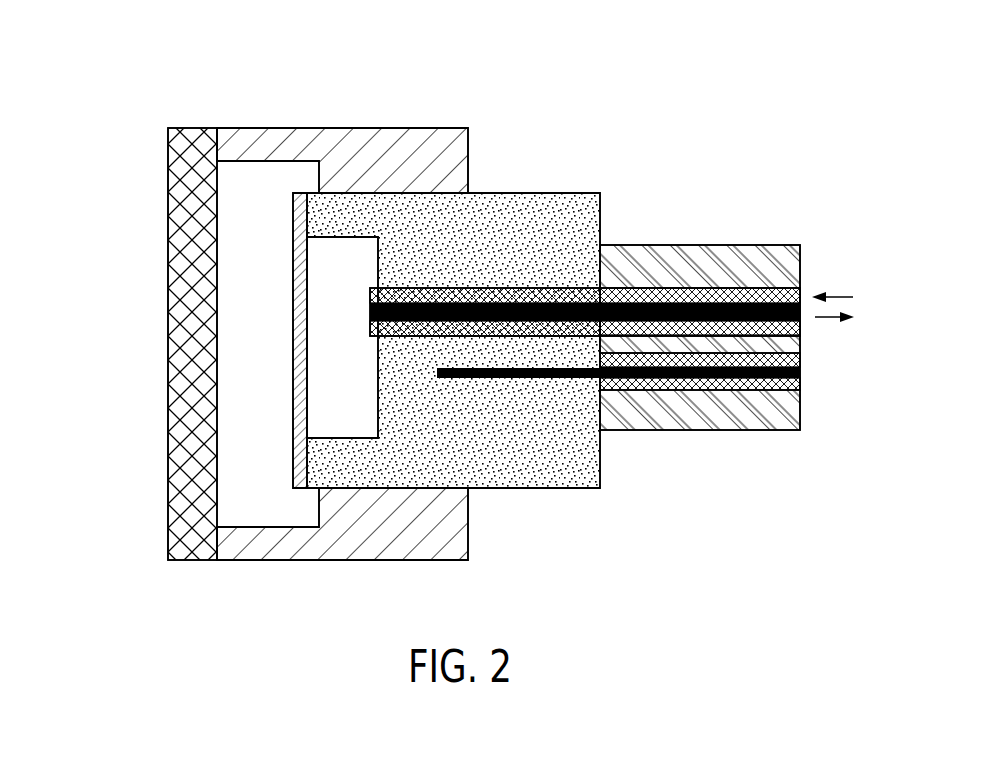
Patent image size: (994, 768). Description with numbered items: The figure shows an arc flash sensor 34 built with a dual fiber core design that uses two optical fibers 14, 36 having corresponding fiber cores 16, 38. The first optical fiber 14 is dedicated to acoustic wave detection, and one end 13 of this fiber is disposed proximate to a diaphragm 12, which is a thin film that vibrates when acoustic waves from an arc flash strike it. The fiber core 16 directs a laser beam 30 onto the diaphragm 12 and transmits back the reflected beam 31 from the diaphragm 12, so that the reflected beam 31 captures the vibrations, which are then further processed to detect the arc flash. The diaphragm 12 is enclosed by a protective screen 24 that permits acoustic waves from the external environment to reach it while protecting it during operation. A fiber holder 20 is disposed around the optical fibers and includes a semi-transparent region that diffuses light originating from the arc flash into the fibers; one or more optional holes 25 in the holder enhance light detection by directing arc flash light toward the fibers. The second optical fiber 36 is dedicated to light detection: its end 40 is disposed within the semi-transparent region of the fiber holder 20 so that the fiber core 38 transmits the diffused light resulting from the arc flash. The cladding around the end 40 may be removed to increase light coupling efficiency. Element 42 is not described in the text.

The diaphragm 12 is at (293, 208).
The end of the first optical fiber 13 is at (370, 295).
The first optical fiber 14 is at (762, 292).
The fiber core 16 is at (716, 298).
The fiber holder 20 is at (577, 490).
The protective screen 24 is at (168, 530).
The optional hole 25 is at (328, 552).
The laser beam 30 is at (838, 290).
The reflected beam 31 is at (832, 326).
The sensor 34 is at (752, 64).
The second optical fiber 36 is at (800, 402).
The fiber core of the second optical fiber 38 is at (730, 390).
The end of the second optical fiber 40 is at (437, 375).
The insulating layer 42 is at (620, 393).